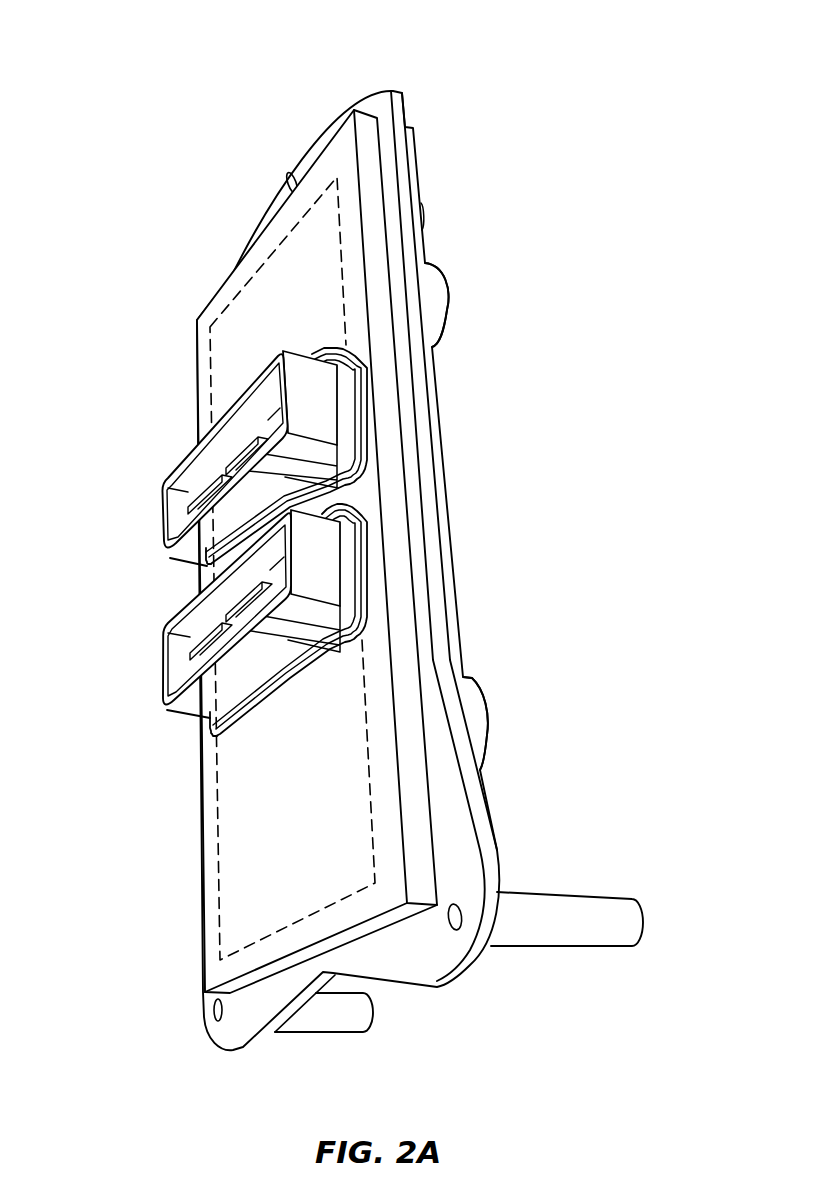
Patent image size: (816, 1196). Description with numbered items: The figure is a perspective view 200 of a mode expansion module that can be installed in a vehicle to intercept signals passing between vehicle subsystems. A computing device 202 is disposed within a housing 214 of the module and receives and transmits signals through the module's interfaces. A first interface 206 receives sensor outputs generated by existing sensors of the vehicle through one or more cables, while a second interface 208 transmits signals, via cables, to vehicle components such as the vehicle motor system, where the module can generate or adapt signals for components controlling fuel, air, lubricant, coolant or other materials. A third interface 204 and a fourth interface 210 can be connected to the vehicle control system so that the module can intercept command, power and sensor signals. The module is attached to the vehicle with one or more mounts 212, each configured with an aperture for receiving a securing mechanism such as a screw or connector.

The perspective view 200 is at (387, 536).
The computing device 202 is at (301, 321).
The third interface 204 is at (447, 308).
The first interface 206 is at (160, 527).
The second interface 208 is at (160, 672).
The fourth interface 210 is at (487, 718).
The mounts 212 is at (643, 923).
The housing 214 is at (203, 867).